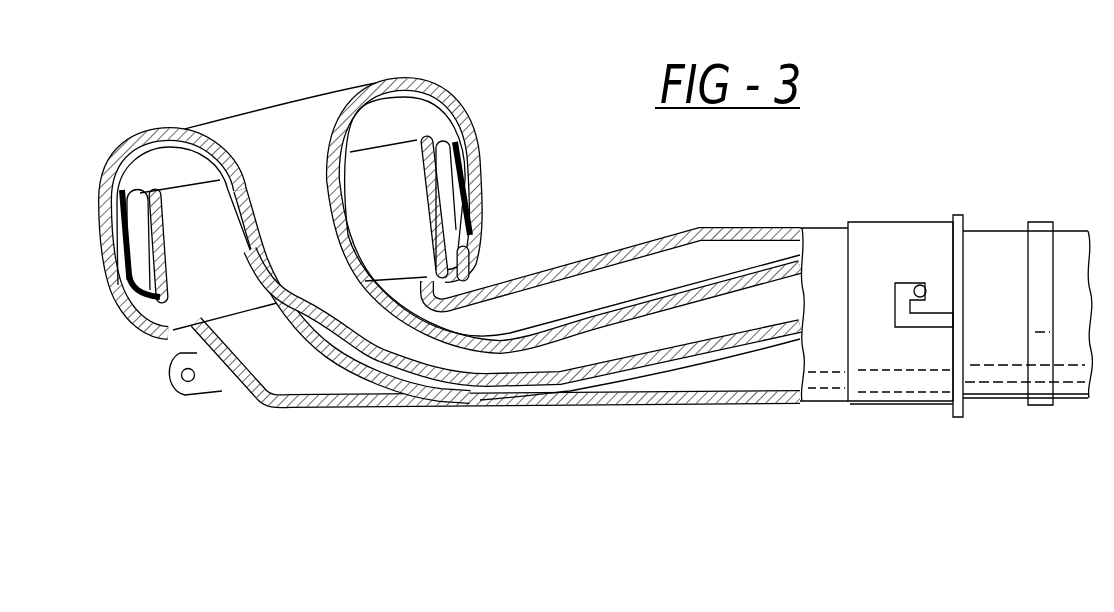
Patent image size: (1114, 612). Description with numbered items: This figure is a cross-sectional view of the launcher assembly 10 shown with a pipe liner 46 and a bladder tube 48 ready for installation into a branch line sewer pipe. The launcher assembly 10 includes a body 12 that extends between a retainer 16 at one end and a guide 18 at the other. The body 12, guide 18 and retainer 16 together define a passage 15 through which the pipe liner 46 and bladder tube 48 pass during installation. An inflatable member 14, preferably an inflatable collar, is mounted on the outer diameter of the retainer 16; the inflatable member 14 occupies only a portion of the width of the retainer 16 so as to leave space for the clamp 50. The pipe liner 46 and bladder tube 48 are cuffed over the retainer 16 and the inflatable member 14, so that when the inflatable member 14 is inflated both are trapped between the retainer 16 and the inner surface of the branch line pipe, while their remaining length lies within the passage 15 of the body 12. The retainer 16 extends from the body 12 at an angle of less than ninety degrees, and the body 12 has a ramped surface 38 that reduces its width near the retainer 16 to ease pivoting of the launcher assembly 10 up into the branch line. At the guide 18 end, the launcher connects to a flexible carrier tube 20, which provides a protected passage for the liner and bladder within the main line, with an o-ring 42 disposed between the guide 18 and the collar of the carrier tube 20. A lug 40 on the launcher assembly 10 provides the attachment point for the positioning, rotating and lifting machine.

The launcher assembly 10 is at (536, 124).
The body 12 is at (597, 280).
The inflatable member 14 is at (422, 166).
The passage 15 is at (547, 300).
The retainer 16 is at (428, 213).
The guide 18 is at (820, 372).
The carrier tube 20 is at (1067, 240).
The ramped surface 38 is at (555, 262).
The lug 40 is at (178, 363).
The o-ring 42 is at (972, 407).
The pipe liner 46 is at (430, 88).
The bladder tube 48 is at (387, 93).
The clamp 50 is at (484, 245).